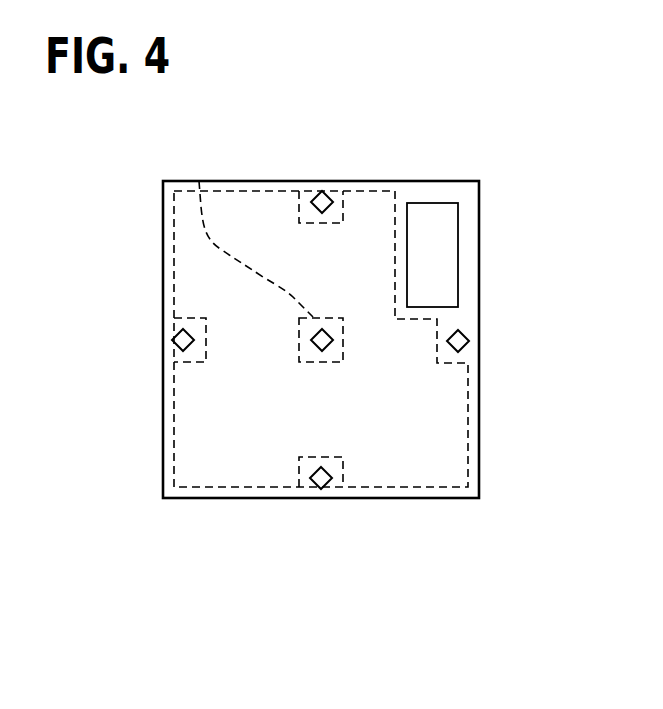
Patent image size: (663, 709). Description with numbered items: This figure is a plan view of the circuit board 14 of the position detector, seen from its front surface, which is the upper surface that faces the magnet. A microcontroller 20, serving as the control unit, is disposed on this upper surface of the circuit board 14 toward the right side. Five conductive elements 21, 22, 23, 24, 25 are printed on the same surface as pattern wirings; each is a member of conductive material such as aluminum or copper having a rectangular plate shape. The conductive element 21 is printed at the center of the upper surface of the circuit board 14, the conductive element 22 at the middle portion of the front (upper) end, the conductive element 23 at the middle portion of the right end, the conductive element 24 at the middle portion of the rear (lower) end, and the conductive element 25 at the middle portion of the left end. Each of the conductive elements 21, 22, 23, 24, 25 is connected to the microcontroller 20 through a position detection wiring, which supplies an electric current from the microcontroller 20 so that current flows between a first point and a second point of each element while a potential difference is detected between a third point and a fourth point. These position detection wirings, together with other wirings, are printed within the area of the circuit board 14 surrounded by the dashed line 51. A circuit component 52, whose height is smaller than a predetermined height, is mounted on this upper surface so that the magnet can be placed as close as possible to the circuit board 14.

The circuit board 14 is at (375, 181).
The microcontroller 20 is at (458, 222).
The conductive element 21 is at (330, 348).
The conductive element 22 is at (332, 195).
The conductive element 23 is at (466, 334).
The conductive element 24 is at (330, 490).
The conductive element 25 is at (178, 333).
The dashed line 51 is at (267, 190).
The circuit component 52 is at (199, 181).